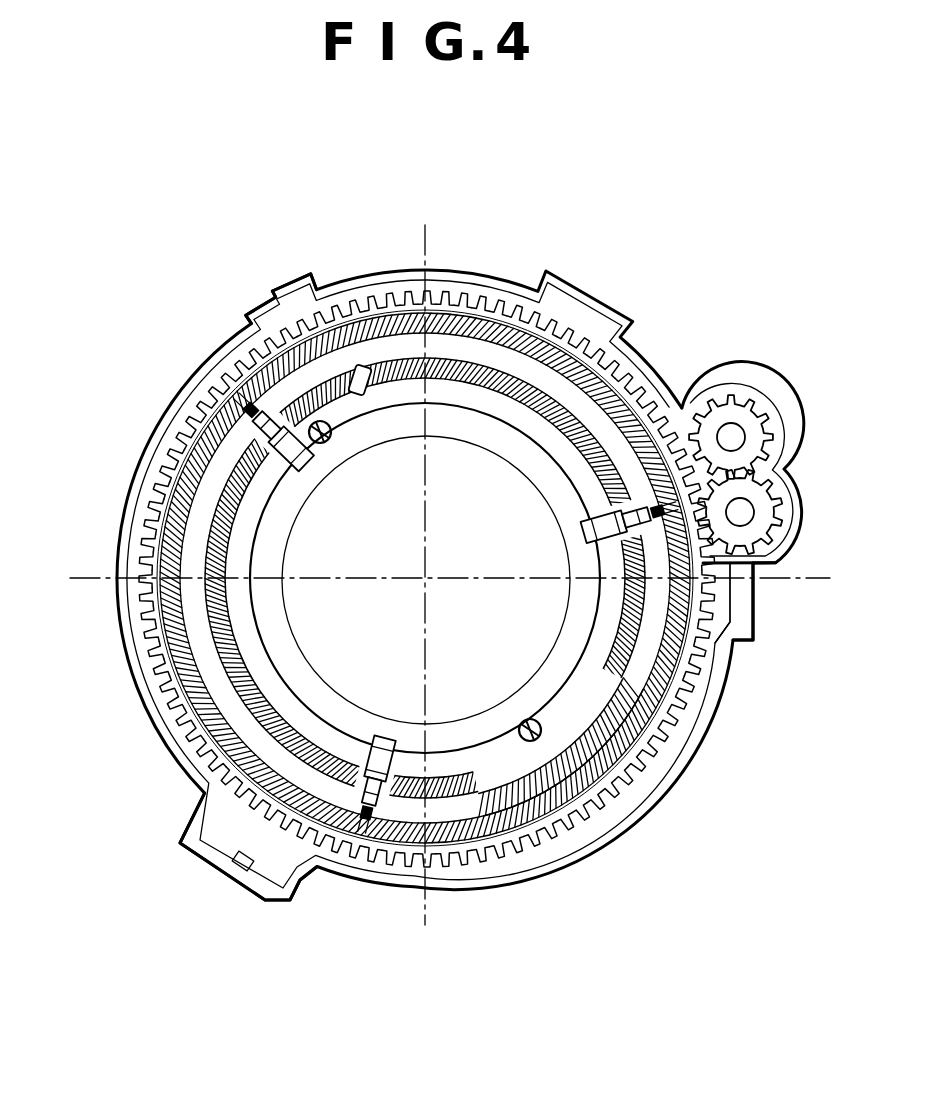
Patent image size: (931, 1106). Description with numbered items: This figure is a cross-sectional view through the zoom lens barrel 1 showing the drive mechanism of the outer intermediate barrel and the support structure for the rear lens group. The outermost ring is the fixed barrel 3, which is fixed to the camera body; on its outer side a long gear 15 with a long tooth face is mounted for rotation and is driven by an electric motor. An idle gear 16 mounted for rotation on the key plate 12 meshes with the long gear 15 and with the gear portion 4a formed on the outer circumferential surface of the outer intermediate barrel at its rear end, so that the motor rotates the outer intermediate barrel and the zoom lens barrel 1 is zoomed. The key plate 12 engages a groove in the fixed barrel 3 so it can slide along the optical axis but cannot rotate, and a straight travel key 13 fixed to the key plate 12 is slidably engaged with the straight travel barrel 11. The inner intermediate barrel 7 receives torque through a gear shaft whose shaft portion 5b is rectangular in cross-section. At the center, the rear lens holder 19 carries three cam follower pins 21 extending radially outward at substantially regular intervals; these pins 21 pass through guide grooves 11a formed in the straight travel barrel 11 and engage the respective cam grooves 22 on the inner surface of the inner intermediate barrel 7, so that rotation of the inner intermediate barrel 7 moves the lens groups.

The zoom lens barrel 1 is at (130, 757).
The fixed barrel 3 is at (504, 281).
The gear portion 4a is at (675, 423).
The shaft portion 5b is at (370, 378).
The inner intermediate barrel 7 is at (755, 623).
The straight travel barrel 11 is at (690, 683).
The guide grooves 11a is at (172, 452).
The key plate 12 is at (299, 296).
The straight travel key 13 is at (597, 733).
The long gear 15 is at (755, 441).
The idle gear 16 is at (778, 512).
The rear lens holder 19 is at (426, 580).
The cam follower pins 21 is at (263, 433).
The cam grooves 22 is at (247, 406).